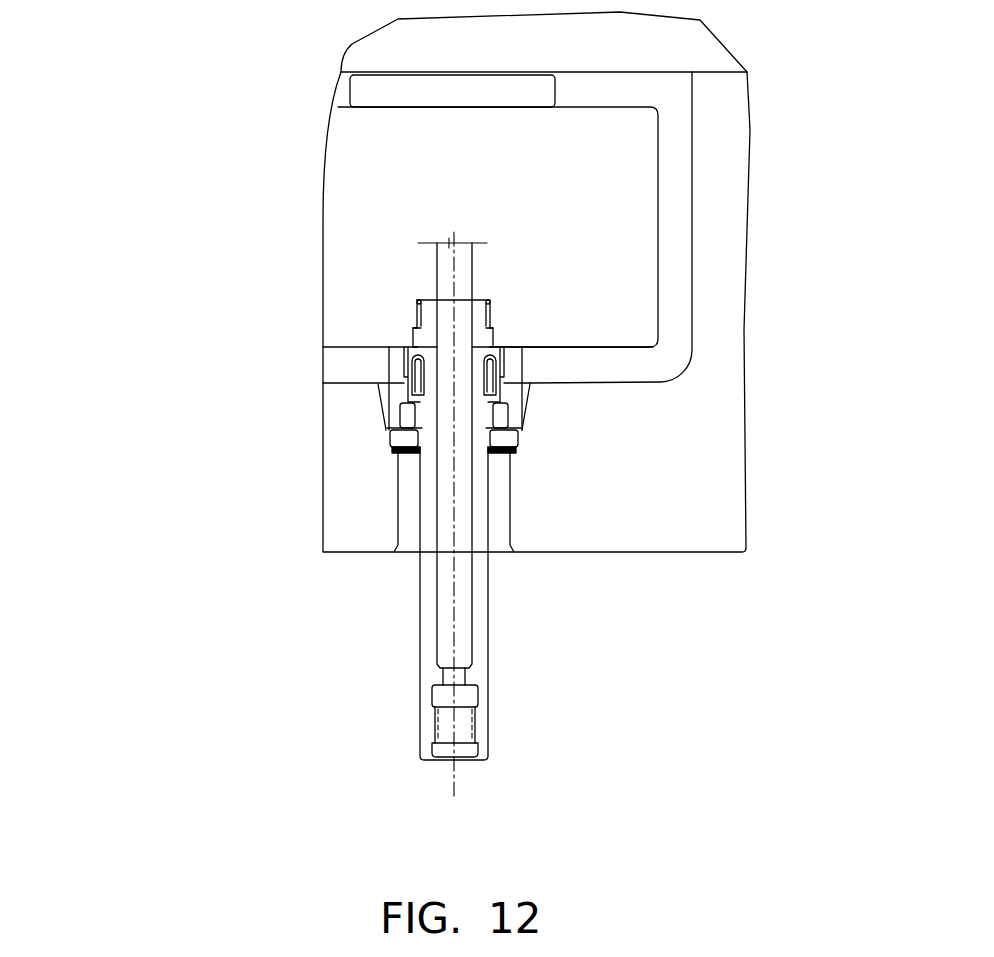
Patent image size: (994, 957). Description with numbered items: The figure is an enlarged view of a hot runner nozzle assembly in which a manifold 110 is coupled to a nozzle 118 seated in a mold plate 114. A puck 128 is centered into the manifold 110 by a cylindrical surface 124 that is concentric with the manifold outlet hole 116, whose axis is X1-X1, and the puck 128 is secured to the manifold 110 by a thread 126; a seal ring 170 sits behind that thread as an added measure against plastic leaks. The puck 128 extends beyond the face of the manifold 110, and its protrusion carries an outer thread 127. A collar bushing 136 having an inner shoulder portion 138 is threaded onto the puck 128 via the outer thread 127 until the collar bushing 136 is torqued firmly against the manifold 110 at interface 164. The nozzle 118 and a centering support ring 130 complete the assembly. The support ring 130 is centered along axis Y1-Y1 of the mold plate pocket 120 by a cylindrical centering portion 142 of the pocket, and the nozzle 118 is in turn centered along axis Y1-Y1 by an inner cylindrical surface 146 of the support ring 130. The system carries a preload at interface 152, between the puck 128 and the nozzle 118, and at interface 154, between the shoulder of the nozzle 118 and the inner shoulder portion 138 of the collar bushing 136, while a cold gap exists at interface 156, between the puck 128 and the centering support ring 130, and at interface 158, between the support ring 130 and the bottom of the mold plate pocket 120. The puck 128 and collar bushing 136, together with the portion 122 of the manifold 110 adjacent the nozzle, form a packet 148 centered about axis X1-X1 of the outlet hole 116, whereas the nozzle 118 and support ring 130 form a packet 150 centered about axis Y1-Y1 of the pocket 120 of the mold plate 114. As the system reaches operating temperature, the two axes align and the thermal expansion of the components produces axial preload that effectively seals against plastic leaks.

The manifold 110 is at (562, 151).
The mold plate 114 is at (705, 150).
The manifold outlet hole 116 is at (458, 270).
The nozzle 118 is at (430, 670).
The mold plate pocket 120 is at (502, 460).
The portion of manifold 122 is at (405, 300).
The cylindrical surface 124 is at (493, 337).
The thread 126 is at (490, 312).
The outer thread 127 is at (499, 372).
The puck 128 is at (430, 342).
The centering support ring 130 is at (392, 440).
The collar bushing 136 is at (397, 357).
The inner shoulder portion 138 is at (413, 416).
The cylindrical centering portion 142 is at (523, 440).
The inner cylindrical surface 146 is at (512, 450).
The packet 148 is at (140, 262).
The packet 150 is at (140, 648).
The interface 152 is at (445, 382).
The interface 154 is at (413, 407).
The interface 156 is at (403, 427).
The interface 158 is at (392, 450).
The interface 164 is at (514, 347).
The seal ring 170 is at (488, 299).